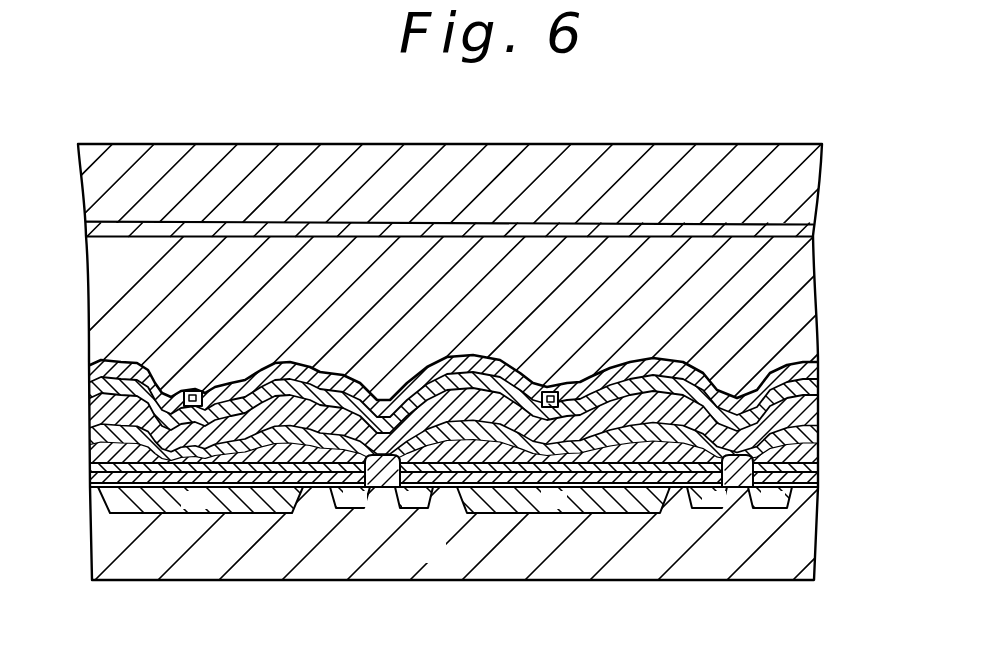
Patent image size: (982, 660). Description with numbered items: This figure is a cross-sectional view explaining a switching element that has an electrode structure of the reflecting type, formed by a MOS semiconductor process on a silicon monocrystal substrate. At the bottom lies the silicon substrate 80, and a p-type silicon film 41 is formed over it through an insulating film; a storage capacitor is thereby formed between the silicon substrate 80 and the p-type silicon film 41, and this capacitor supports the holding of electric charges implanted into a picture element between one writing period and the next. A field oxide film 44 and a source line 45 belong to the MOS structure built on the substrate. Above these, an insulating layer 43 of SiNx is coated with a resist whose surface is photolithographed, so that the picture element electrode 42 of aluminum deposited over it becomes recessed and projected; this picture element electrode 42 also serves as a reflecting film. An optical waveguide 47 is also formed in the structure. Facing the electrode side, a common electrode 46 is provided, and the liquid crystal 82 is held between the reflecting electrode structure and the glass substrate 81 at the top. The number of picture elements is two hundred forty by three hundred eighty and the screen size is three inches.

The p-type silicon film 41 is at (818, 460).
The picture element electrode 42 is at (818, 378).
The insulating layer 43 is at (88, 437).
The field oxide film 44 is at (100, 470).
The source line 45 is at (818, 425).
The common electrode 46 is at (814, 237).
The optical waveguide 47 is at (567, 440).
The silicon substrate 80 is at (813, 556).
The glass substrate 81 is at (819, 202).
The liquid crystal 82 is at (818, 290).